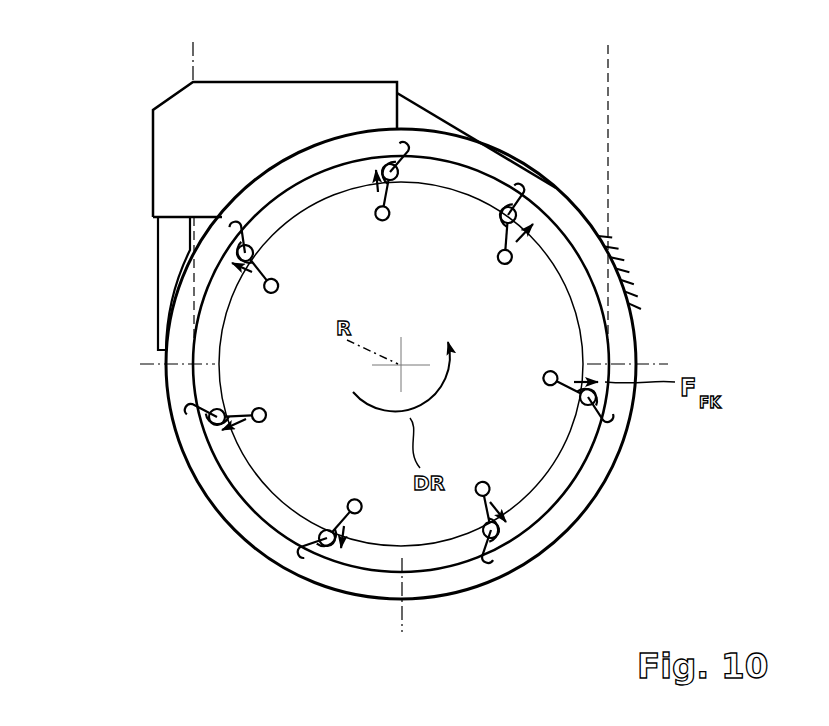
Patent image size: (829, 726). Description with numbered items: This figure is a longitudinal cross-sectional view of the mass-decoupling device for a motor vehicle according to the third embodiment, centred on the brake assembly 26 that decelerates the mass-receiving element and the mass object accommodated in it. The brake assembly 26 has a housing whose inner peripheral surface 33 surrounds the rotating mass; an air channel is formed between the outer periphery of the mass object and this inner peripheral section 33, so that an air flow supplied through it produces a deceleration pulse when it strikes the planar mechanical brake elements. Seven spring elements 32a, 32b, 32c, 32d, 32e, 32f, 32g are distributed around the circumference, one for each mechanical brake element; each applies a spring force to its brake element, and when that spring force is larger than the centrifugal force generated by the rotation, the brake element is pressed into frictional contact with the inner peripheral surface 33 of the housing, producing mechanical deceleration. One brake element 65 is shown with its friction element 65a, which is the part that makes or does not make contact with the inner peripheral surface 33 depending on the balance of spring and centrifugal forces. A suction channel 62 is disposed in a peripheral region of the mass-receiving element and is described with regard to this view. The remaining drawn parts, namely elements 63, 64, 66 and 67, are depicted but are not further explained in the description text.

The brake assembly 26 is at (648, 157).
The spring element 32a is at (593, 422).
The spring element 32b is at (500, 546).
The spring element 32c is at (322, 557).
The spring element 32d is at (210, 419).
The spring element 32e is at (240, 251).
The spring element 32f is at (400, 160).
The spring element 32g is at (528, 190).
The inner peripheral surface of the housing 33 is at (556, 176).
The suction channel 62 is at (158, 291).
The housing block 63 is at (153, 156).
The rotor ring 64 is at (200, 462).
The brake element 65 is at (578, 396).
The friction element 65a is at (610, 427).
The pendulum weight 66 is at (543, 378).
The friction lining 67 is at (634, 270).